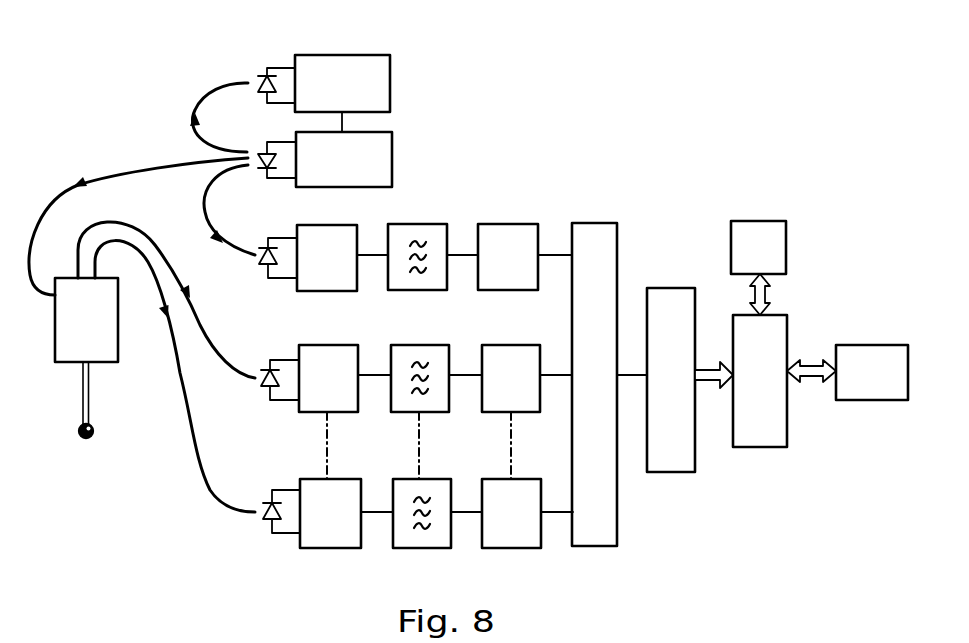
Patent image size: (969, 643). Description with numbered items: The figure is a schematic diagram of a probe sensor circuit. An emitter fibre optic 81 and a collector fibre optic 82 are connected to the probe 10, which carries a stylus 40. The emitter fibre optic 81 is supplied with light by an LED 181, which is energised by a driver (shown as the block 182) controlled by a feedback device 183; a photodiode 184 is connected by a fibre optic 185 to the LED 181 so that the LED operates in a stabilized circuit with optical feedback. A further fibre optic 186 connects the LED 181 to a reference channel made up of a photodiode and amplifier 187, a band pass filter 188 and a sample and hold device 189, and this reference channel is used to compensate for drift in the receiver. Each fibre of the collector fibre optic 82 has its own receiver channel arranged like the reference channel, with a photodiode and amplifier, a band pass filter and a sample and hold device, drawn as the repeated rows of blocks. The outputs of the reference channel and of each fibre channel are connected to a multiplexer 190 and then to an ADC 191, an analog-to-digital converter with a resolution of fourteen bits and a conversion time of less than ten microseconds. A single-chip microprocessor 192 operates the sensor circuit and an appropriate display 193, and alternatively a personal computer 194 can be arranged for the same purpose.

The probe 10 is at (128, 341).
The stylus 40 is at (70, 412).
The emitter fibre optic 81 is at (124, 163).
The collector fibre optic 82 is at (180, 373).
The LED 181 is at (264, 176).
The receiver 182 is at (392, 177).
The feedback device 183 is at (392, 80).
The photodiode 184 is at (262, 73).
The fibre optic 185 is at (200, 105).
The further fibre optic 186 is at (206, 194).
The photodiode and amplifier 187 is at (318, 292).
The band pass filter 188 is at (421, 291).
The sample and hold device 189 is at (512, 291).
The multiplexer 190 is at (588, 223).
The ADC (analog-to-digital converter) 191 is at (663, 288).
The single-chip microprocessor 192 is at (760, 448).
The display 193 is at (754, 221).
The personal computer 194 is at (866, 345).